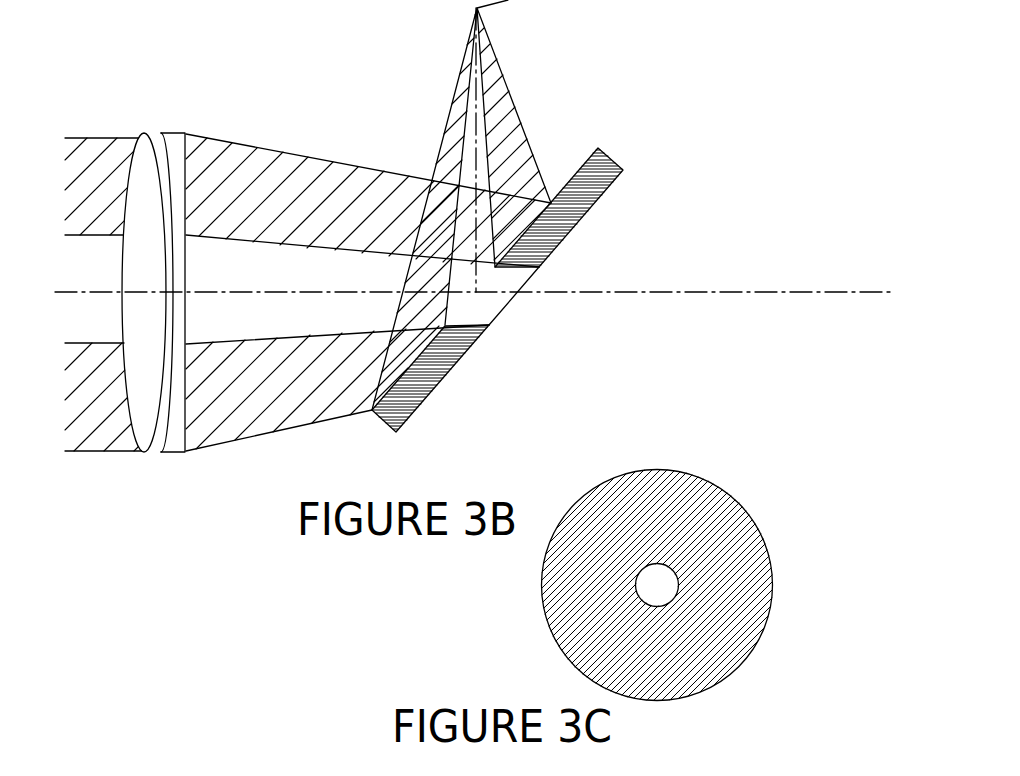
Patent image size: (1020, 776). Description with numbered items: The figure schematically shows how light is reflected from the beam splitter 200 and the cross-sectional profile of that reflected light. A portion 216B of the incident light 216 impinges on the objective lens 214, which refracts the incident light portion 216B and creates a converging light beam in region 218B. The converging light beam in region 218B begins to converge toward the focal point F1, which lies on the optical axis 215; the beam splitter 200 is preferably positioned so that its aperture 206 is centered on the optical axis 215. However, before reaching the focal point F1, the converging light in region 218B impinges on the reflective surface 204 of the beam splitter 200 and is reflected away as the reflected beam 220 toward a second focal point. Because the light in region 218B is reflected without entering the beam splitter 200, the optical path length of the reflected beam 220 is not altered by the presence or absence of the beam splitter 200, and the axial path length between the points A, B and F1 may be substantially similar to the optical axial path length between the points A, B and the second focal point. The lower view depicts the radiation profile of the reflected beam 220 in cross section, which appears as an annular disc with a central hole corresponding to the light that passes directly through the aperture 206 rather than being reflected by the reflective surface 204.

In FIG. 3B, the beam splitter 200 is at (608, 190).
In FIG. 3B, the reflective surface 204 is at (382, 392).
In FIG. 3B, the aperture 206 is at (483, 317).
In FIG. 3B, the objective lens 214 is at (150, 137).
In FIG. 3B, the optical axis 215 is at (640, 293).
In FIG. 3B, the incident light 216 is at (118, 440).
In FIG. 3B, the incident light portion 216B is at (83, 148).
In FIG. 3B, the region of converging light beam 218B is at (277, 170).
In FIG. 3B, the reflected beam 220 is at (498, 127).
In FIG. 3C, the reflected beam 220 is at (712, 513).
In FIG. 3B, the point A is at (147, 292).
In FIG. 3B, the point B is at (487, 291).
In FIG. 3B, the focal point F1 is at (880, 292).